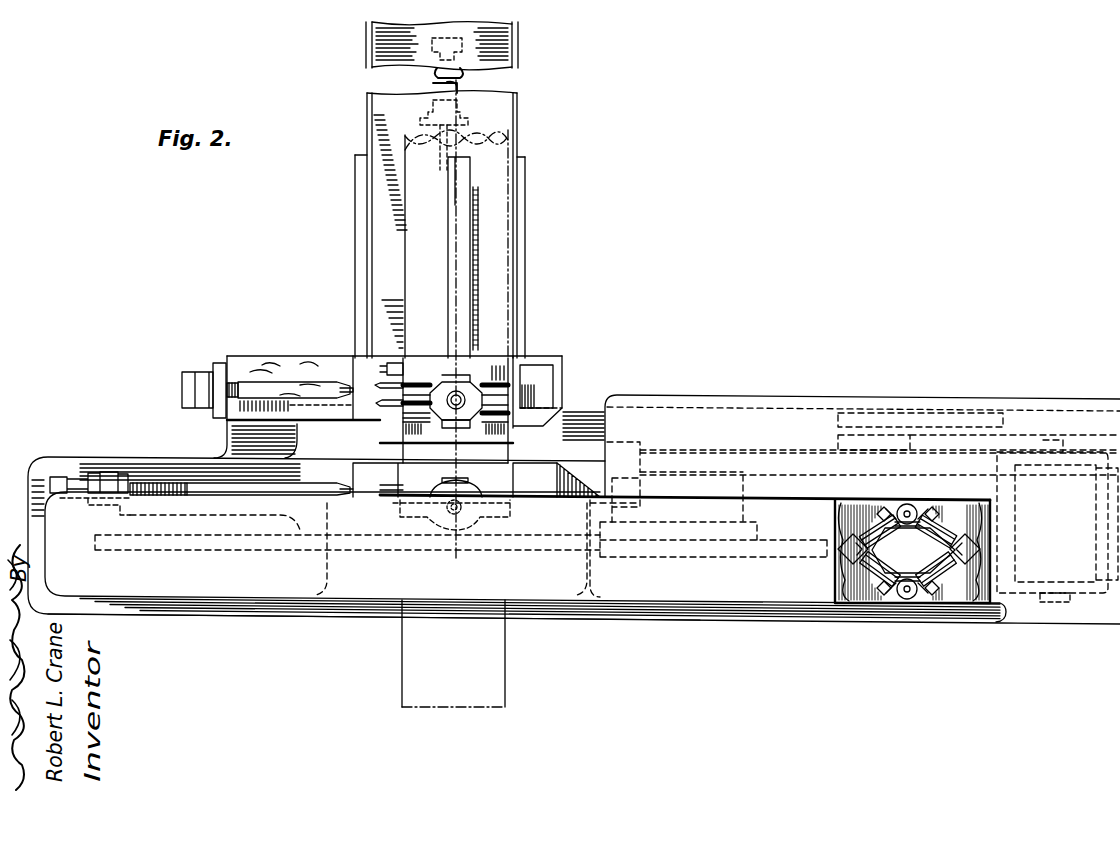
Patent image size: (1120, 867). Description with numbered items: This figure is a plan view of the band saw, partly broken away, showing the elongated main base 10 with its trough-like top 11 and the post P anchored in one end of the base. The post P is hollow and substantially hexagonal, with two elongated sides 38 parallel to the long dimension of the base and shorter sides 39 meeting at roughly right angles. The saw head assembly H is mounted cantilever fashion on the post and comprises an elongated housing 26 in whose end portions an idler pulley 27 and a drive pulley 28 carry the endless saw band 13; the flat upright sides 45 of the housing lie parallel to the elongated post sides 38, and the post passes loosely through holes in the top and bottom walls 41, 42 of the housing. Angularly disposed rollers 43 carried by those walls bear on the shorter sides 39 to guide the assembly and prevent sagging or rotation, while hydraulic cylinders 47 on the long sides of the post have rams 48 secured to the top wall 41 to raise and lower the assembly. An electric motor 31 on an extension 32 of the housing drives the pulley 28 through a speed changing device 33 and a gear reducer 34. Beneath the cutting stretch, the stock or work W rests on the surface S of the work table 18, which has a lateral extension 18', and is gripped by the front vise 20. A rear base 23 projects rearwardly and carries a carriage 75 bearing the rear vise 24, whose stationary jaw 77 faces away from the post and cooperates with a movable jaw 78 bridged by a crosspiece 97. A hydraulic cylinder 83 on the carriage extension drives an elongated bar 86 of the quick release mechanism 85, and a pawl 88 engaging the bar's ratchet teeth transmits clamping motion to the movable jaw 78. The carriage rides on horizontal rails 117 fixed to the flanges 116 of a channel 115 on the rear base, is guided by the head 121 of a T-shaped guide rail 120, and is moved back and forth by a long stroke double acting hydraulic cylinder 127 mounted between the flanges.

The main base 10 is at (742, 634).
The top 11 is at (570, 610).
The endless saw band 13 is at (424, 553).
The work supporting table 18 is at (385, 458).
The lateral extension of work table 18' is at (96, 471).
The front vise 20 is at (607, 469).
The rear base 23 is at (346, 207).
The rear vise 24 is at (551, 340).
The housing 26 is at (696, 602).
The idler pulley 27 is at (205, 552).
The drive pulley 28 is at (720, 553).
The electric motor 31 is at (1078, 452).
The extension 32 is at (1083, 602).
The speed changing device 33 is at (882, 415).
The gear reducer 34 is at (706, 483).
The elongated sides of post 38 is at (934, 508).
The shorter sides of post 39 is at (954, 514).
The top wall of housing 41 is at (640, 532).
The bottom wall of housing 42 is at (936, 502).
The rollers 43 is at (848, 536).
The upright sides of housing 45 is at (620, 606).
The hydraulic cylinders 47 is at (918, 507).
The rams 48 is at (906, 504).
The carriage 75 is at (302, 362).
The stationary jaw 77 is at (548, 375).
The movable jaw 78 is at (398, 368).
The hydraulic cylinder 83 is at (200, 373).
The quick release mechanism 85 is at (280, 355).
The elongated bar 86 is at (232, 396).
The pawl 88 is at (325, 382).
The crosspiece or bridge 97 is at (490, 375).
The channel 115 is at (490, 114).
The flanges 116 is at (367, 115).
The horizontal rails 117 is at (358, 240).
The guide rail 120 is at (466, 175).
The head of guide rail 121 is at (452, 207).
The long stroke double acting hydraulic cylinder 127 is at (472, 90).
The saw head assembly H is at (352, 587).
The post P is at (912, 551).
The work supporting surface S is at (565, 450).
The stock or work W is at (480, 676).